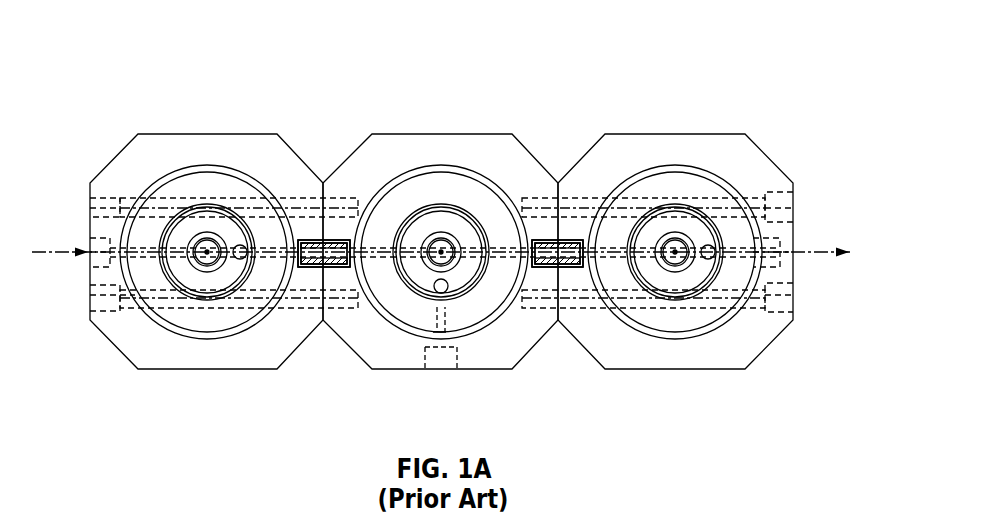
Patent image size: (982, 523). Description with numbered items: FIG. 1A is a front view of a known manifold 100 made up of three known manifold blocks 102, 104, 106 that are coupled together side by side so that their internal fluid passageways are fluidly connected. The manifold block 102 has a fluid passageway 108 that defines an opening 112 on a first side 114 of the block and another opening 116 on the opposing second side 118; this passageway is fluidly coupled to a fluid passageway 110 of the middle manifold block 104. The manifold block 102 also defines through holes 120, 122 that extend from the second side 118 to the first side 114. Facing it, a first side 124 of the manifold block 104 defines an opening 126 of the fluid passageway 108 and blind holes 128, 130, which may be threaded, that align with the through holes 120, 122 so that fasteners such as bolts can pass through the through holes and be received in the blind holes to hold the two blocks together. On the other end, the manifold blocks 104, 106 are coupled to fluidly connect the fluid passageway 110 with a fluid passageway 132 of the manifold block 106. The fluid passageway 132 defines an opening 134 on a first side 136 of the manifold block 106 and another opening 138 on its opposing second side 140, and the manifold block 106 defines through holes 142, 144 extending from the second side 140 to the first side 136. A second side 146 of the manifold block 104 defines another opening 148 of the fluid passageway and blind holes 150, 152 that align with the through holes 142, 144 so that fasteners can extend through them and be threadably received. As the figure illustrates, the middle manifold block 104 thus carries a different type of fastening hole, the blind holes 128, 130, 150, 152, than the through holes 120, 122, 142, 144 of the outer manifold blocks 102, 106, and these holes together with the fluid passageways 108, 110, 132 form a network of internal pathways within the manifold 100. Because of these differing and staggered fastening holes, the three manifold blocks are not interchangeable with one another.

The manifold 100 is at (154, 33).
The manifold block 102 is at (138, 134).
The manifold block 104 is at (442, 133).
The manifold block 106 is at (675, 134).
The fluid passageway 108 is at (264, 259).
The fluid passageway 110 is at (517, 277).
The opening 112 is at (312, 231).
The first side 114 is at (325, 268).
The opening 116 is at (82, 266).
The second side 118 is at (88, 233).
The through hole 120 is at (134, 196).
The through hole 122 is at (132, 308).
The first side 124 is at (324, 253).
The opening 126 is at (324, 253).
The blind hole 128 is at (342, 197).
The blind hole 130 is at (340, 308).
The fluid passageway 132 is at (728, 258).
The opening 134 is at (542, 231).
The first side 136 is at (558, 269).
The opening 138 is at (803, 263).
The second side 140 is at (795, 230).
The through hole 142 is at (752, 197).
The through hole 144 is at (752, 308).
The second side 146 is at (557, 253).
The opening 148 is at (557, 253).
The blind hole 150 is at (560, 195).
The blind hole 152 is at (540, 308).